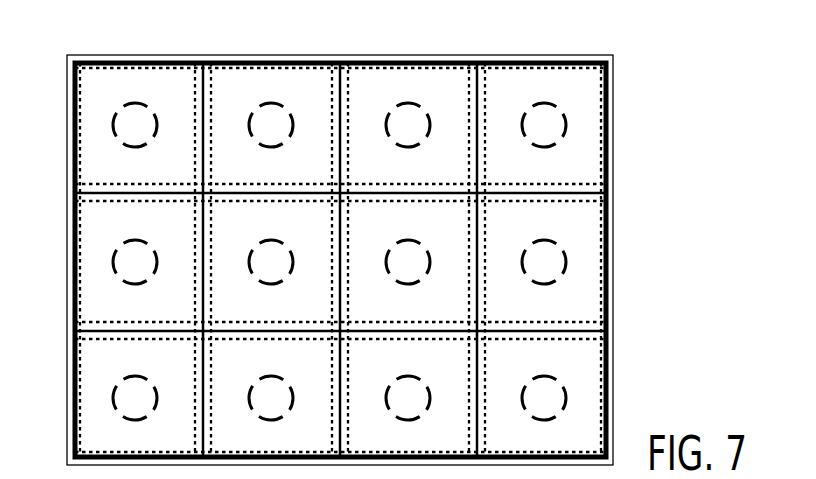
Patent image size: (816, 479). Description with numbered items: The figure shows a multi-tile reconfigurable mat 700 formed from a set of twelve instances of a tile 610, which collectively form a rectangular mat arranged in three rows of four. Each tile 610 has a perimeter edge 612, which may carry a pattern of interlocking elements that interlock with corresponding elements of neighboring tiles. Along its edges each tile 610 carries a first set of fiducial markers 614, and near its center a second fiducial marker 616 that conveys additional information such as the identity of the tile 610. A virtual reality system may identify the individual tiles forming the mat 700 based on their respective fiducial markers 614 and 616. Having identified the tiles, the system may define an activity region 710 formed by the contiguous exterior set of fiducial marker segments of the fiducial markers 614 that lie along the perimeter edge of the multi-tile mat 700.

The multi-tile reconfigurable mat 700 is at (598, 35).
The activity region 710 is at (412, 67).
The perimeter edge 612 is at (108, 57).
The tile 610 is at (155, 95).
The first set of fiducial markers 614 is at (195, 85).
The second fiducial marker 616 is at (120, 108).